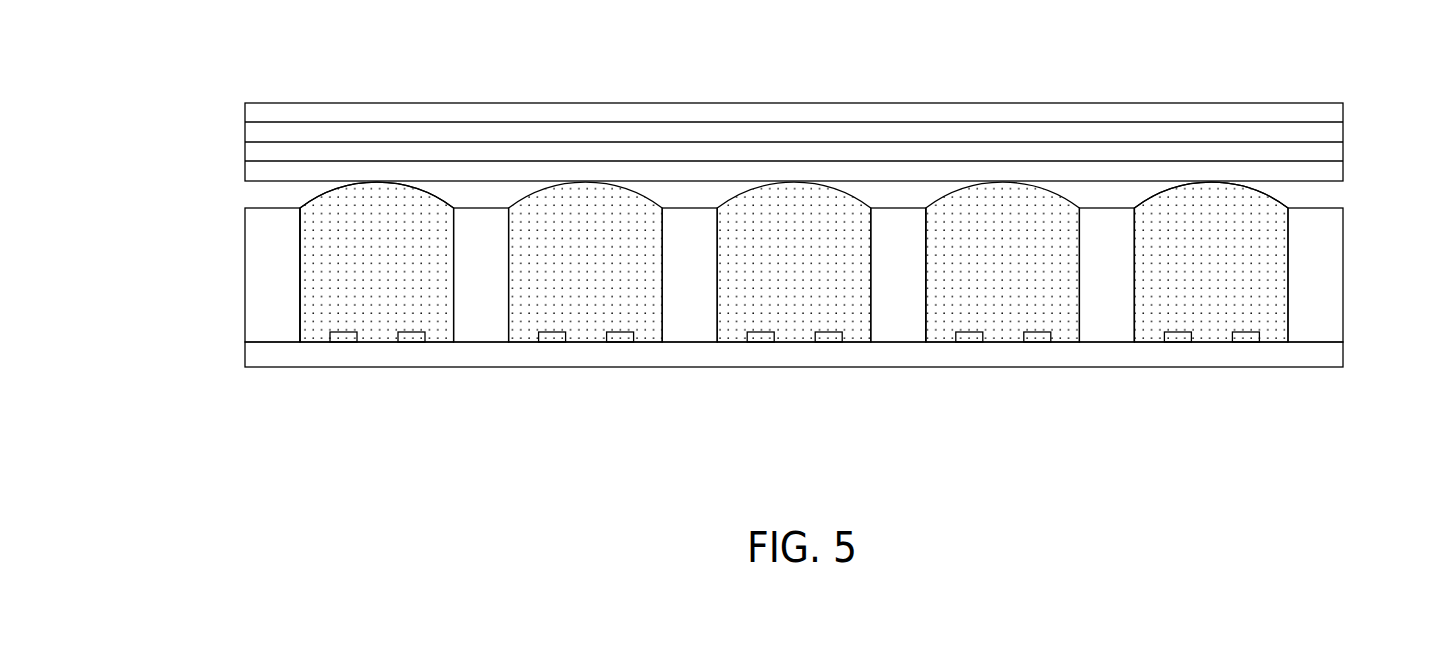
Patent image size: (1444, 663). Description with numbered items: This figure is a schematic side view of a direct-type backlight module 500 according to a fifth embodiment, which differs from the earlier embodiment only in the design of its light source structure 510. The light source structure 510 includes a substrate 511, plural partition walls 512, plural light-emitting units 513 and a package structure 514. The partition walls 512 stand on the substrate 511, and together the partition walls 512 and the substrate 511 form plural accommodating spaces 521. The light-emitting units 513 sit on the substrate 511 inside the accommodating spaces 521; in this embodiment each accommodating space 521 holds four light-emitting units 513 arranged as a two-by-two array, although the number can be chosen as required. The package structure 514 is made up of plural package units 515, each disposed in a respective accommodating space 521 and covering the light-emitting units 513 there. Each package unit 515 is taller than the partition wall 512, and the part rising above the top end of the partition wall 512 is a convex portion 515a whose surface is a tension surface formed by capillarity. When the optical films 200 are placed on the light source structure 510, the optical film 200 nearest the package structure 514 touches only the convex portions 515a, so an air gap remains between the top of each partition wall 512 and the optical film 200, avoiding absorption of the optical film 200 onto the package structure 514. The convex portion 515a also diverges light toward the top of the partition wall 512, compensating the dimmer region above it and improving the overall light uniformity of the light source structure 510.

The backlight module 500 is at (112, 61).
The optical films 200 is at (232, 103).
The light source structure 510 is at (763, 300).
The substrate 511 is at (382, 355).
The partition walls 512 is at (485, 320).
The light-emitting units 513 is at (619, 340).
The package structure 514 is at (1262, 268).
The package units 515 is at (945, 322).
The convex portion 515a is at (1237, 198).
The accommodating spaces 521 is at (298, 305).